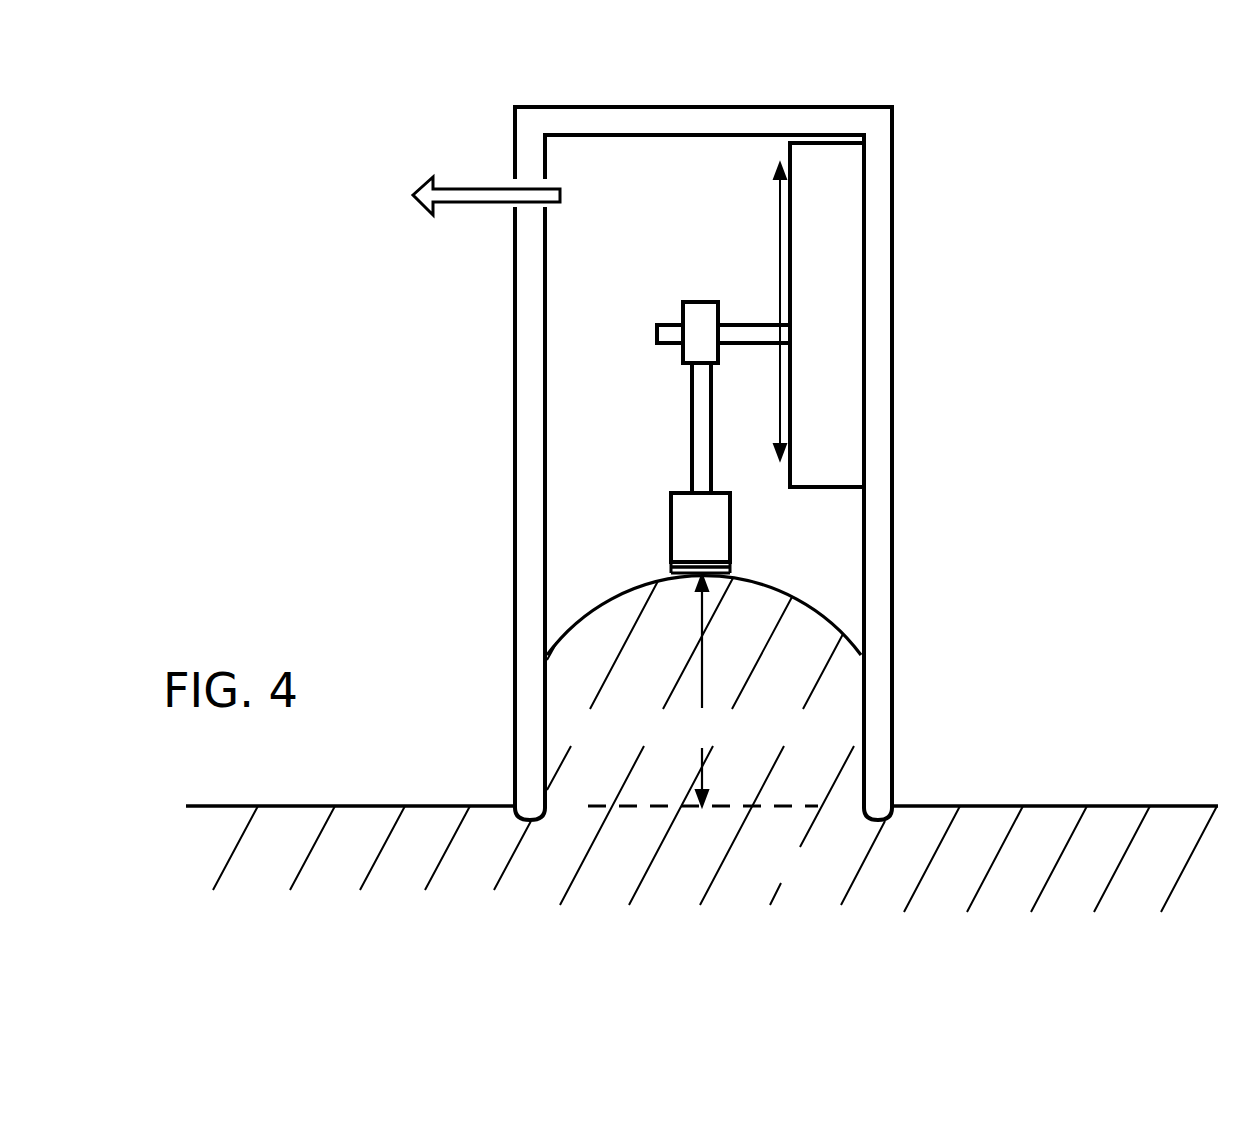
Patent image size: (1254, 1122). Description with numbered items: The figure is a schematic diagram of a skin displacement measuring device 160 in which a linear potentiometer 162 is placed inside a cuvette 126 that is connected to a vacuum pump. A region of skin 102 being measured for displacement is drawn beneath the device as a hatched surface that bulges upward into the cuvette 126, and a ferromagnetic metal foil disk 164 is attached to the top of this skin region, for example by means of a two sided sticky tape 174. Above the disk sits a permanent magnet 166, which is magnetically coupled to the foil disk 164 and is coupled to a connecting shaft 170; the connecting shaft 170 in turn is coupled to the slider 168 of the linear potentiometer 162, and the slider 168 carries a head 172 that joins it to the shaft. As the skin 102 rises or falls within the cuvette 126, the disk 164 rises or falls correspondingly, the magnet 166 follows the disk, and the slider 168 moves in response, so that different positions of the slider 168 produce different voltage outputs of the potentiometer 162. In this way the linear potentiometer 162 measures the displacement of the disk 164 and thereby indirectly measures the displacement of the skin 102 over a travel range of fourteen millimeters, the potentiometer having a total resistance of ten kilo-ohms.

The skin 102 is at (580, 760).
The cuvette 126 is at (897, 747).
The skin displacement measuring device 160 is at (1000, 78).
The linear potentiometer 162 is at (830, 250).
The ferromagnetic metal foil disk 164 is at (740, 557).
The permanent magnet 166 is at (669, 510).
The slider 168 is at (655, 335).
The connecting shaft 170 is at (688, 447).
The slider head 172 is at (703, 302).
The two sided sticky tape 174 is at (740, 570).